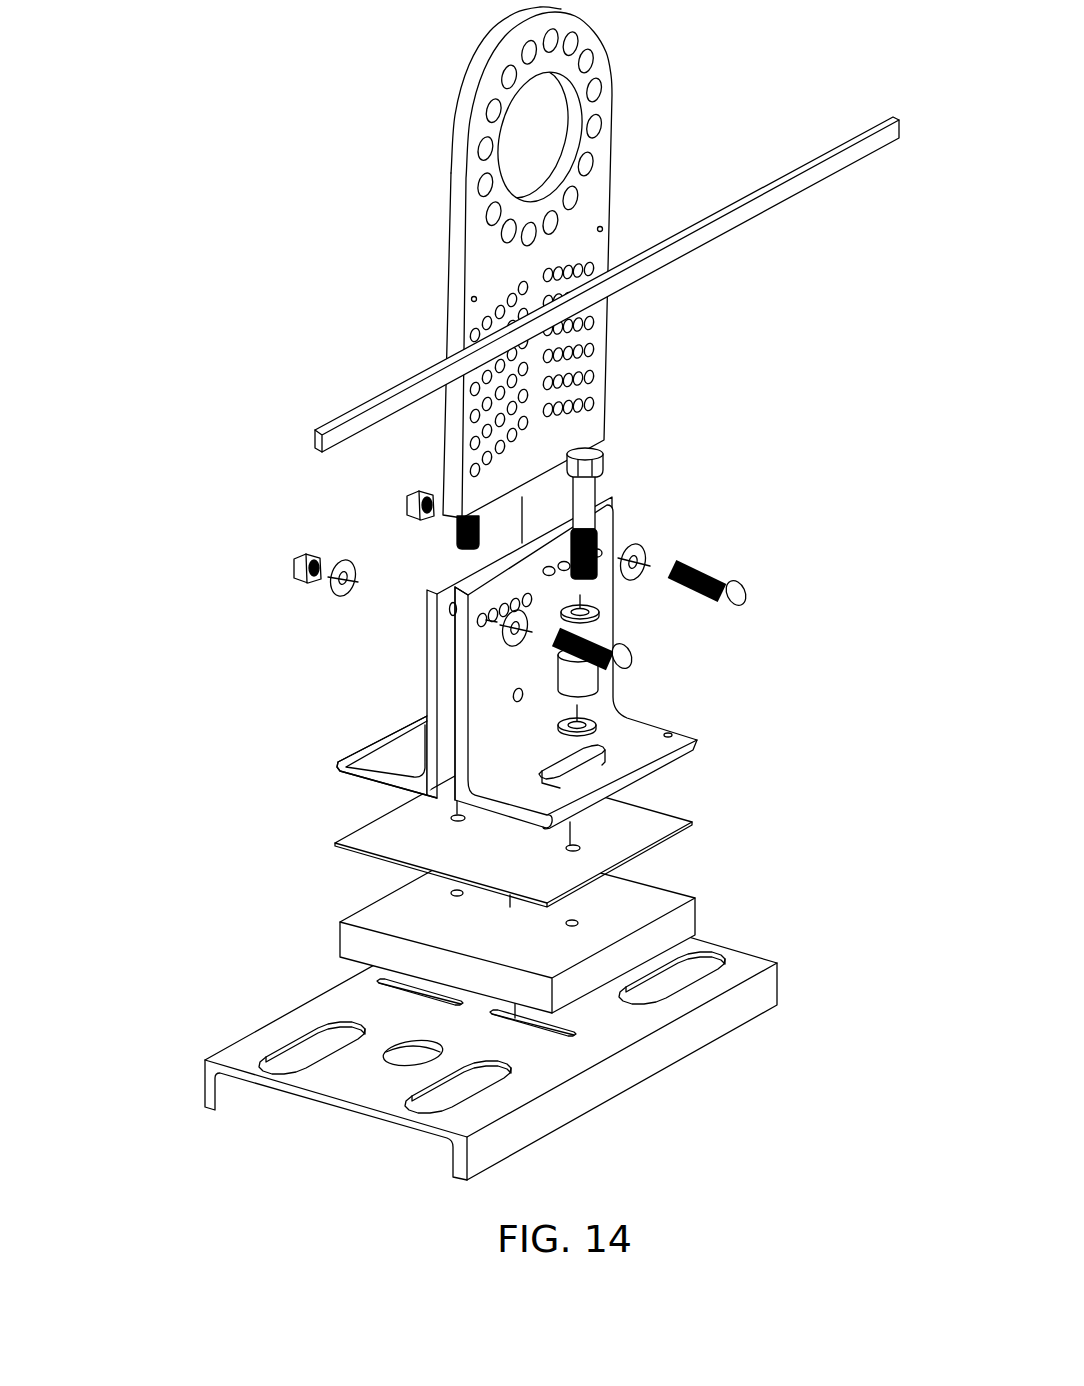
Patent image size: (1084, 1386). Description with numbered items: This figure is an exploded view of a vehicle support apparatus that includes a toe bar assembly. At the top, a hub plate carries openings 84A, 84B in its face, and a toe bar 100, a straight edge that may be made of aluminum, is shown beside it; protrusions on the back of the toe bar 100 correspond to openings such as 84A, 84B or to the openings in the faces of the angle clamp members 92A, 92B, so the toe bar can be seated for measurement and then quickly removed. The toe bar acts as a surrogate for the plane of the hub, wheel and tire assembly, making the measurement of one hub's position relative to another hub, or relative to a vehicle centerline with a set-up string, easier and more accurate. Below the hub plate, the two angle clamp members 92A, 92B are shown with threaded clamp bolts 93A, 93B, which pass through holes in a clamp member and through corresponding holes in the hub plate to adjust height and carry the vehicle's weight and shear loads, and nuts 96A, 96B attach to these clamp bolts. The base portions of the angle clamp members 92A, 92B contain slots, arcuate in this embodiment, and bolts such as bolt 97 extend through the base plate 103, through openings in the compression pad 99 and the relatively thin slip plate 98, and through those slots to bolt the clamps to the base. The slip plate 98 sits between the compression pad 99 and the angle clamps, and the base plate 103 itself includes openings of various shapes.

The opening in hub plate 84A is at (472, 298).
The opening in hub plate 84B is at (602, 228).
The angle clamp member 92A is at (537, 802).
The angle clamp member 92B is at (679, 728).
The threaded clamp bolt 93A is at (637, 653).
The threaded clamp bolt 93B is at (737, 570).
The nut 96A is at (293, 553).
The nut 96B is at (408, 497).
The bolt 97 is at (608, 455).
The slip plate 98 is at (687, 813).
The compression pad 99 is at (687, 890).
The toe bar 100 is at (826, 153).
The base plate 103 is at (724, 1018).